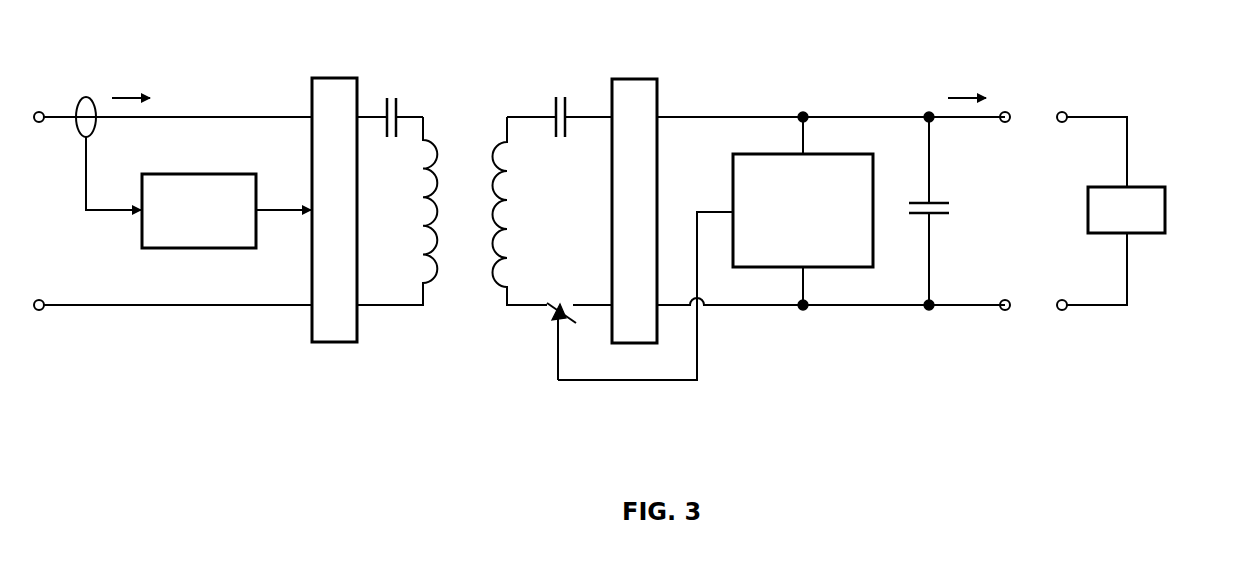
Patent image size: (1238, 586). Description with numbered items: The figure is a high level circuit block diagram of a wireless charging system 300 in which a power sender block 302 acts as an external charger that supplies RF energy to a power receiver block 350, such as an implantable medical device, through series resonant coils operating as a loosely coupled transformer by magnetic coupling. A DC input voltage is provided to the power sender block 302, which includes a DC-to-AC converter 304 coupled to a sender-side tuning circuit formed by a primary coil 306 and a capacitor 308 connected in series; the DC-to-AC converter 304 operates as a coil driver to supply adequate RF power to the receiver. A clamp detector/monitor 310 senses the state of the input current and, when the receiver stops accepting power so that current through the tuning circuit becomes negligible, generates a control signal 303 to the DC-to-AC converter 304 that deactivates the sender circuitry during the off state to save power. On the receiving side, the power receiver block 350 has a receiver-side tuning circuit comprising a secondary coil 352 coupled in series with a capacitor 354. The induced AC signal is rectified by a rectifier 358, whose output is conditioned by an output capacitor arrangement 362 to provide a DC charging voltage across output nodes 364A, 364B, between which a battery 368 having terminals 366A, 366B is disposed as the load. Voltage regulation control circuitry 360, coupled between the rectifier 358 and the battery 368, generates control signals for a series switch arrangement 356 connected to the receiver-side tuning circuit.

The wireless charging system 300 is at (225, 470).
The power sender block 302 is at (215, 334).
The control signal 303 is at (289, 206).
The DC-to-AC converter 304 is at (336, 78).
The primary coil 306 is at (430, 228).
The capacitor 308 is at (400, 98).
The clamp detector/monitor 310 is at (185, 250).
The power receiver block 350 is at (941, 355).
The secondary coil 352 is at (500, 229).
The capacitor 354 is at (553, 104).
The series switch arrangement 356 is at (548, 311).
The rectifier 358 is at (637, 79).
The voltage regulation control circuitry 360 is at (847, 268).
The output capacitor arrangement 362 is at (940, 218).
The output node 364A is at (1009, 110).
The output node 364B is at (1009, 311).
The battery terminal 366A is at (1065, 110).
The battery terminal 366B is at (1065, 311).
The battery 368 is at (1145, 237).